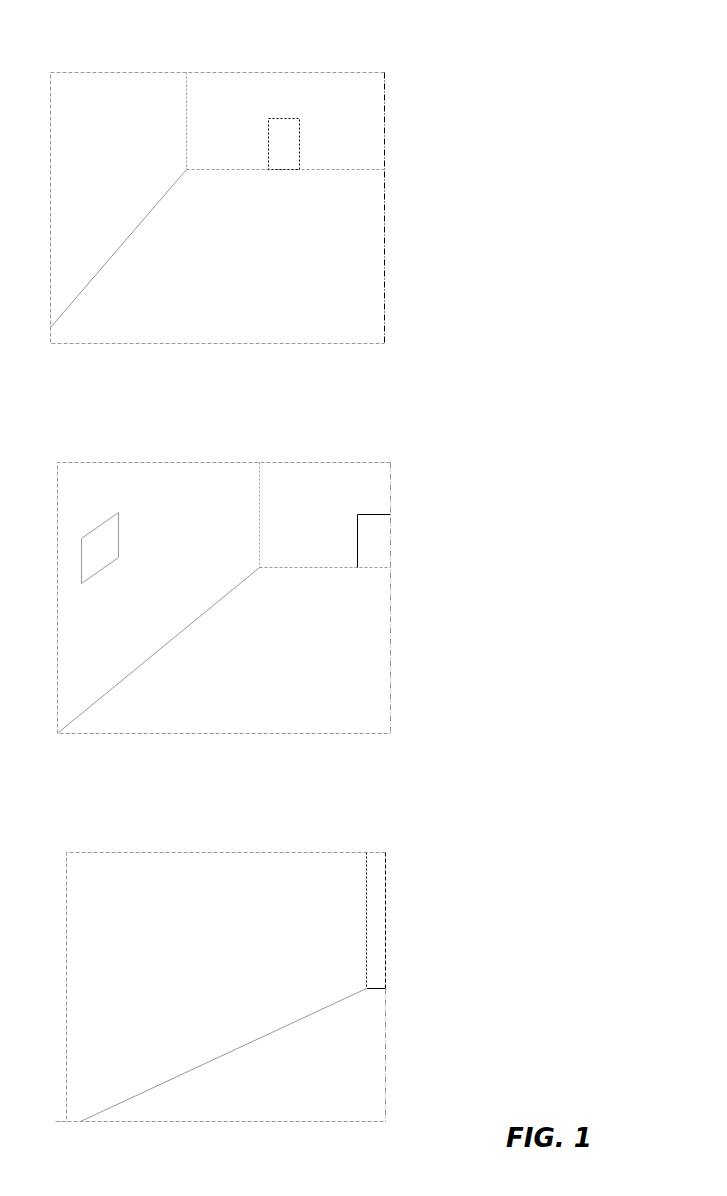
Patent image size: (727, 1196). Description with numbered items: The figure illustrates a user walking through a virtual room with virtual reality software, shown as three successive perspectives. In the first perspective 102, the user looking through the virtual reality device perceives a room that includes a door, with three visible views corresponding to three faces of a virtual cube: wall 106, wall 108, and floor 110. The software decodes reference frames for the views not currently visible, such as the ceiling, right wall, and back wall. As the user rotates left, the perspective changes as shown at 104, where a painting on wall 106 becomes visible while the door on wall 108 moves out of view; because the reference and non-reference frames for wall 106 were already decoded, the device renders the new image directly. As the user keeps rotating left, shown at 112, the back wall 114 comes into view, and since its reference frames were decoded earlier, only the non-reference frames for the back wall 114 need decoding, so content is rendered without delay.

The initial view of virtual room 102 is at (383, 128).
The rotated view of virtual room 104 is at (390, 503).
The wall 106 is at (117, 95).
The wall 108 is at (267, 97).
The floor 110 is at (365, 237).
The further rotated view of virtual room 112 is at (385, 923).
The back wall 114 is at (103, 863).